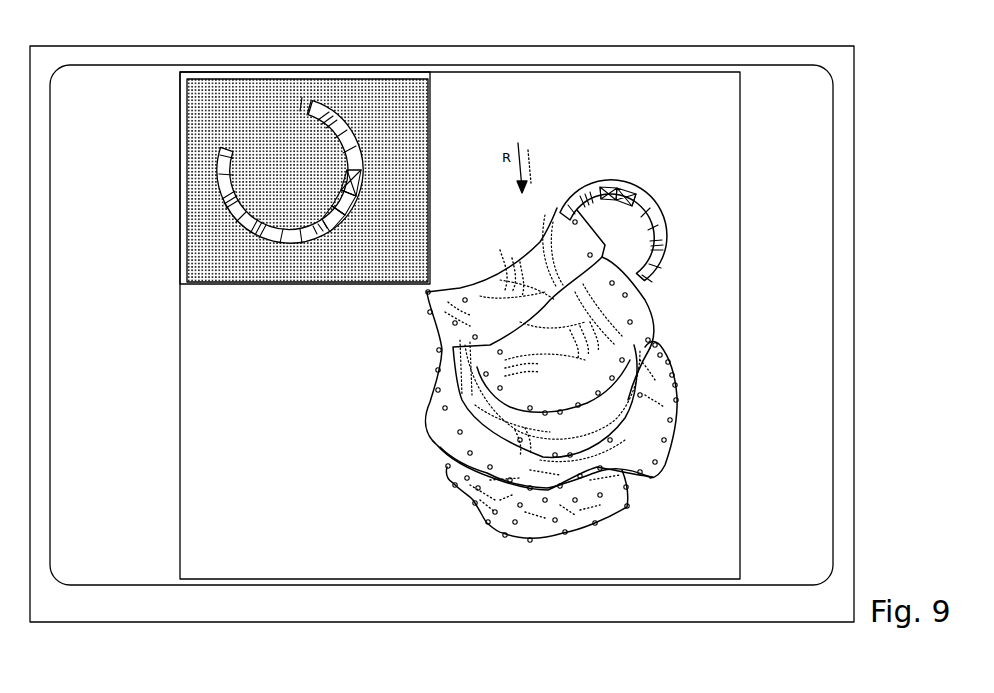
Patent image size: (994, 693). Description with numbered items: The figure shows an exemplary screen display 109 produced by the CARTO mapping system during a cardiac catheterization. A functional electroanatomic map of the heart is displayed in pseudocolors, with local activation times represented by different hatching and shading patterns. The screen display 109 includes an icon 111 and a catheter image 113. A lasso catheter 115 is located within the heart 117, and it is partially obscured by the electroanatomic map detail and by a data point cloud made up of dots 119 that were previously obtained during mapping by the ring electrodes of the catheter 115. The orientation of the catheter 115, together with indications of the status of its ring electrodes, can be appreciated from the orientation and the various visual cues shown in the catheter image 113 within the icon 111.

The screen display 109 is at (580, 46).
The icon 111 is at (273, 284).
The catheter image 113 is at (377, 141).
The lasso catheter 115 is at (438, 410).
The heart 117 is at (622, 302).
The dots 119 is at (655, 342).